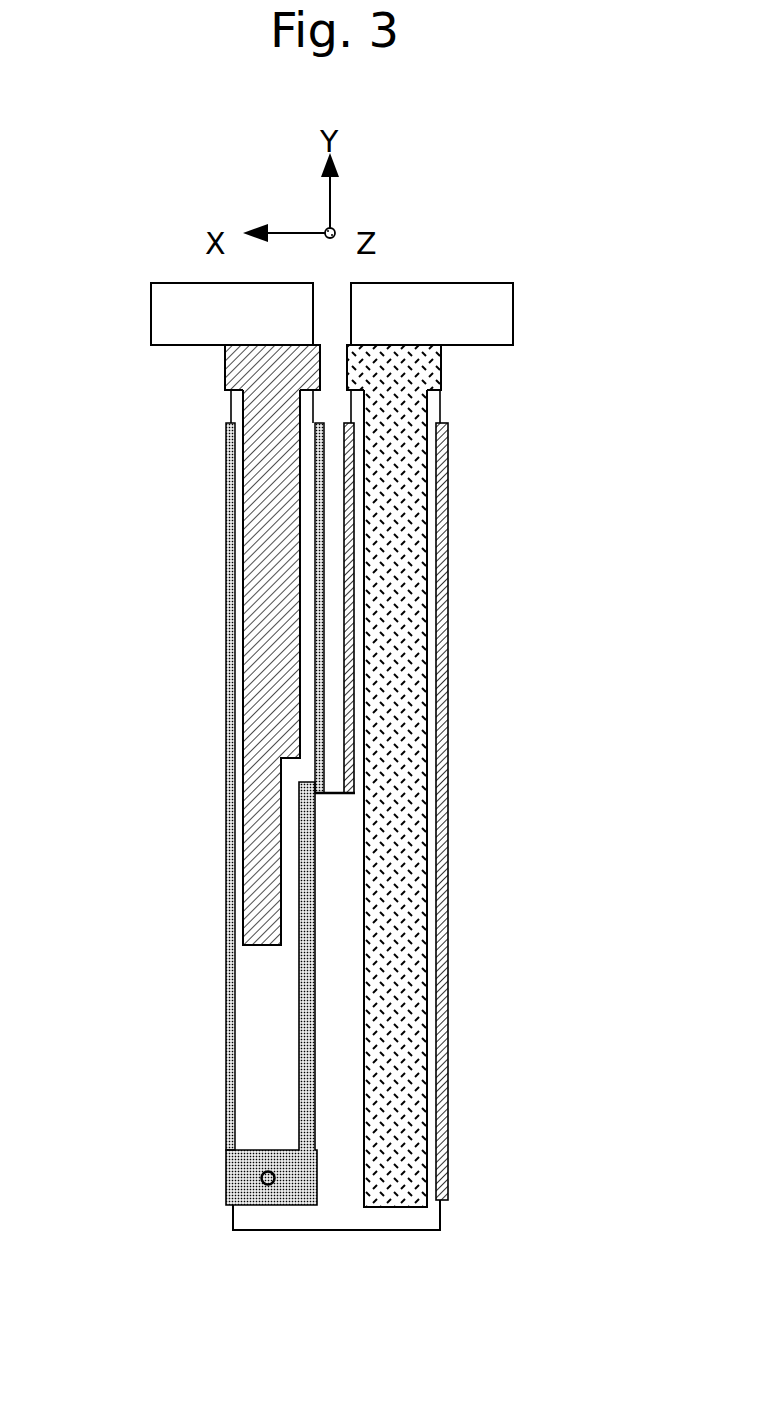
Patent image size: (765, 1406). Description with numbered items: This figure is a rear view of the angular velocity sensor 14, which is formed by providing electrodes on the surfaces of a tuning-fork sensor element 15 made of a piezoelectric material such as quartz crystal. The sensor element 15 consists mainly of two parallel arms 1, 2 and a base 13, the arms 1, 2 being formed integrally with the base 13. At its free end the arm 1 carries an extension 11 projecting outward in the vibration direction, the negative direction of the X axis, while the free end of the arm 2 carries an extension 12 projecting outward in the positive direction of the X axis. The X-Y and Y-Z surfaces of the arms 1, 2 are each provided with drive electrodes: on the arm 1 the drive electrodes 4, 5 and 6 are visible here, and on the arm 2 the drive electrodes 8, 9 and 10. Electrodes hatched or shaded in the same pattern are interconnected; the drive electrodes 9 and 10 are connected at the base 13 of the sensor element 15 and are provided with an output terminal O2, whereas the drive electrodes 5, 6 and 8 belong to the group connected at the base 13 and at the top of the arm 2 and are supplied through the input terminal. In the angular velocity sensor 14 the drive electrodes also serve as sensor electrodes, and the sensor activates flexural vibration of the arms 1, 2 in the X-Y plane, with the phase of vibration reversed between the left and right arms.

The arm 1 is at (438, 402).
The arm 2 is at (233, 402).
The drive electrode 4 is at (408, 700).
The drive electrode 5 is at (447, 792).
The drive electrode 6 is at (345, 528).
The drive electrode 8 is at (258, 675).
The drive electrode 9 is at (323, 487).
The drive electrode 10 is at (227, 747).
The extension 11 is at (502, 315).
The extension 12 is at (180, 307).
The base 13 is at (342, 958).
The angular velocity sensor 14 is at (197, 970).
The sensor element 15 is at (343, 1232).
The output terminal O2 is at (261, 1180).